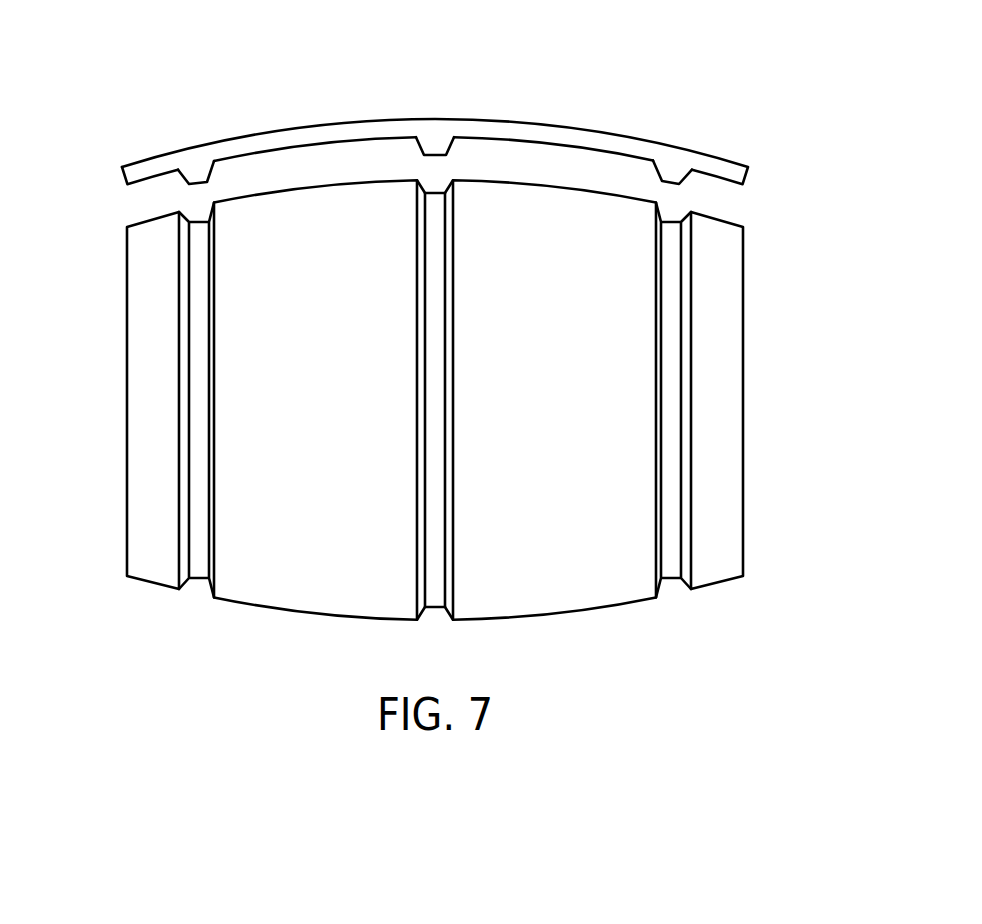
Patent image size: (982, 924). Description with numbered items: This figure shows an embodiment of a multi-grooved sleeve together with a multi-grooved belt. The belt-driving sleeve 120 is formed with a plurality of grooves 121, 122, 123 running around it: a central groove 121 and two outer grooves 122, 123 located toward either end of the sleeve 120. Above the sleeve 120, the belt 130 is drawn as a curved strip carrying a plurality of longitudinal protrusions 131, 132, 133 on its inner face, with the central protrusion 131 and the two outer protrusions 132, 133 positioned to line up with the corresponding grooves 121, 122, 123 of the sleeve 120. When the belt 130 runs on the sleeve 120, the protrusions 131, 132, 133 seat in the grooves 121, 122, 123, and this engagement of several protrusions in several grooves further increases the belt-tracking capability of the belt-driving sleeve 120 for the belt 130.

The belt-driving sleeve 120 is at (620, 460).
The groove 121 is at (437, 378).
The groove 122 is at (202, 417).
The groove 123 is at (672, 383).
The belt 130 is at (552, 135).
The longitudinal protrusion 131 is at (432, 148).
The longitudinal protrusion 132 is at (197, 172).
The longitudinal protrusion 133 is at (675, 175).